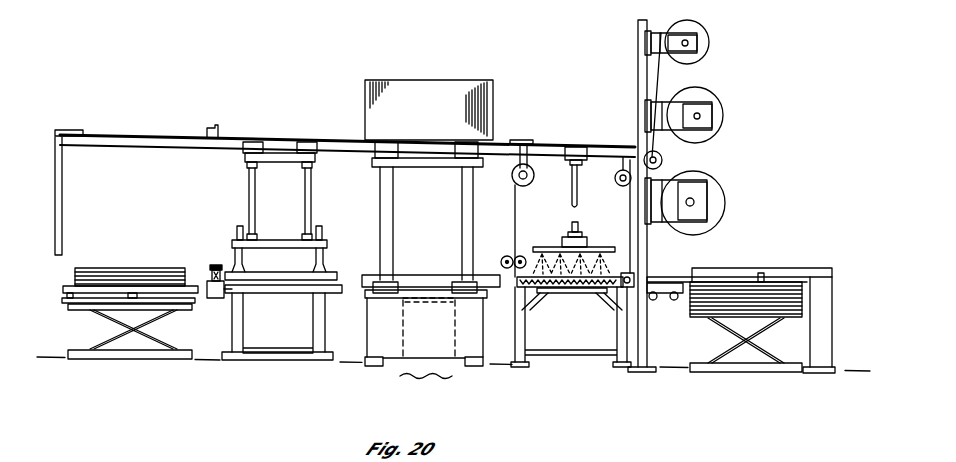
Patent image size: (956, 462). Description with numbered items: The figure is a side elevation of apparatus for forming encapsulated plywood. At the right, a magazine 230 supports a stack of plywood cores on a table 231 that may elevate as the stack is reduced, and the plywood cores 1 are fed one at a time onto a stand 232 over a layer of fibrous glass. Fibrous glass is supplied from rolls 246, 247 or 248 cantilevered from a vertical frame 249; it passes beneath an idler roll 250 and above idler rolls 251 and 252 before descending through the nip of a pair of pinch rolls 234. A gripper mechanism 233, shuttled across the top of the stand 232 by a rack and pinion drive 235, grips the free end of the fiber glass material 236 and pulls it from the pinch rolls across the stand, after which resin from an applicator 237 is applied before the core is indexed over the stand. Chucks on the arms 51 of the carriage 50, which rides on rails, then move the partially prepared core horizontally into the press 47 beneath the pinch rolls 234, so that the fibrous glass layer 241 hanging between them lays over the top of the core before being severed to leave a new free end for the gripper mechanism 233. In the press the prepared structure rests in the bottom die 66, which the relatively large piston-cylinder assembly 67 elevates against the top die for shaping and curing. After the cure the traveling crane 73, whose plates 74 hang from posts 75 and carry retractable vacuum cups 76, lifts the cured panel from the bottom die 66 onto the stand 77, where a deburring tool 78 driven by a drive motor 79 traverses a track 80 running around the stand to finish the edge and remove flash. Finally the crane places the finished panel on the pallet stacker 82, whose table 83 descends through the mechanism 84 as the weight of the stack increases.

The plywood core 1 is at (678, 283).
The press 47 is at (452, 74).
The carriage 50 is at (574, 146).
The arms 51 is at (578, 194).
The bottom die 66 is at (420, 271).
The piston-cylinder assembly 67 is at (405, 372).
The traveling crane 73 is at (268, 153).
The plates 74 is at (272, 240).
The posts 75 is at (312, 200).
The vacuum cups 76 is at (322, 271).
The stand 77 is at (313, 334).
The deburring tool 78 is at (215, 265).
The drive motor 79 is at (207, 285).
The track 80 is at (258, 294).
The pallet stacker 82 is at (62, 277).
The table 83 is at (180, 311).
The mechanism 84 is at (148, 351).
The magazine 230 is at (752, 263).
The table 231 is at (700, 318).
The stand 232 is at (618, 334).
The gripper mechanism 233 is at (644, 270).
The pinch rolls 234 is at (504, 253).
The rack and pinion drive 235 is at (572, 294).
The fiber glass material 236 is at (518, 296).
The applicator 237 is at (600, 246).
The fibrous glass layer 241 is at (517, 195).
The roll 246 is at (723, 196).
The roll 247 is at (718, 103).
The roll 248 is at (707, 30).
The vertical frame 249 is at (638, 68).
The idler roll 250 is at (664, 165).
The idler roll 251 is at (622, 169).
The idler roll 252 is at (534, 170).